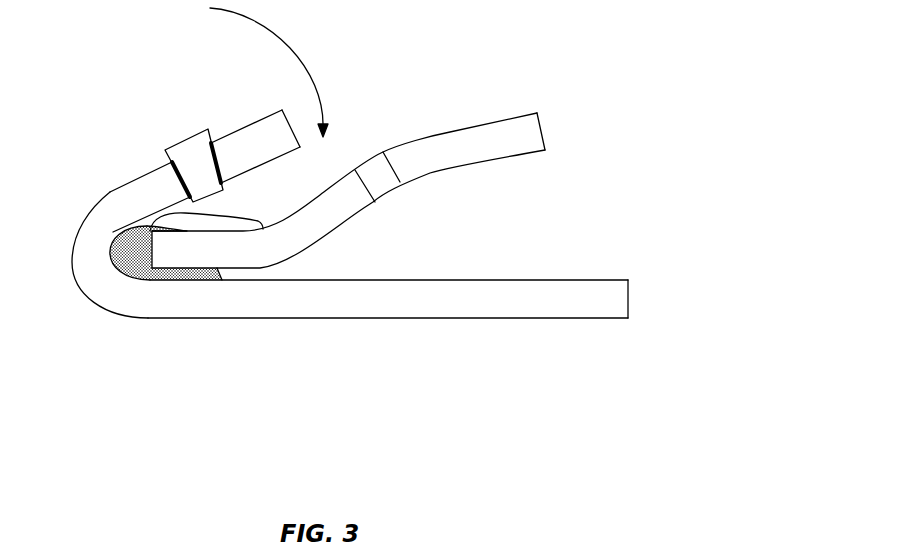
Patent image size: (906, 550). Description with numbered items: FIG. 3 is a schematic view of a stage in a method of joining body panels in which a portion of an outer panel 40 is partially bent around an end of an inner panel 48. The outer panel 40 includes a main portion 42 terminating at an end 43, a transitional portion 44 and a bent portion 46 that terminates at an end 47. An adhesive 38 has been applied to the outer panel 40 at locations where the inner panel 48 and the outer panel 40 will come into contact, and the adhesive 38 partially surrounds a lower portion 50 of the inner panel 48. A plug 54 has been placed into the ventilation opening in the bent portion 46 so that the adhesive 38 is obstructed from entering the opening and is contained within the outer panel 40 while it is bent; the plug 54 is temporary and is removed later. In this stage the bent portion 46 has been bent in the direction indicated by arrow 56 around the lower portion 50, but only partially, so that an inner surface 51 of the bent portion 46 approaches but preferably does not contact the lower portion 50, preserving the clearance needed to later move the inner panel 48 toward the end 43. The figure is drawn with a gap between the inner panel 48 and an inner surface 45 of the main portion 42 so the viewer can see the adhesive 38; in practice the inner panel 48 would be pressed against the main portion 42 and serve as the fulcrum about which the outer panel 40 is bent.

The adhesive 38 is at (360, 189).
The outer panel 40 is at (429, 293).
The main portion 42 is at (628, 330).
The end 43 is at (629, 302).
The inner surface 45 is at (443, 280).
The transitional portion 44 is at (50, 227).
The bent portion 46 is at (181, 143).
The end 47 is at (291, 125).
The inner panel 48 is at (543, 131).
The lower portion 50 is at (205, 215).
The inner surface 51 is at (152, 203).
The plug 54 is at (180, 157).
The arrow 56 is at (291, 50).